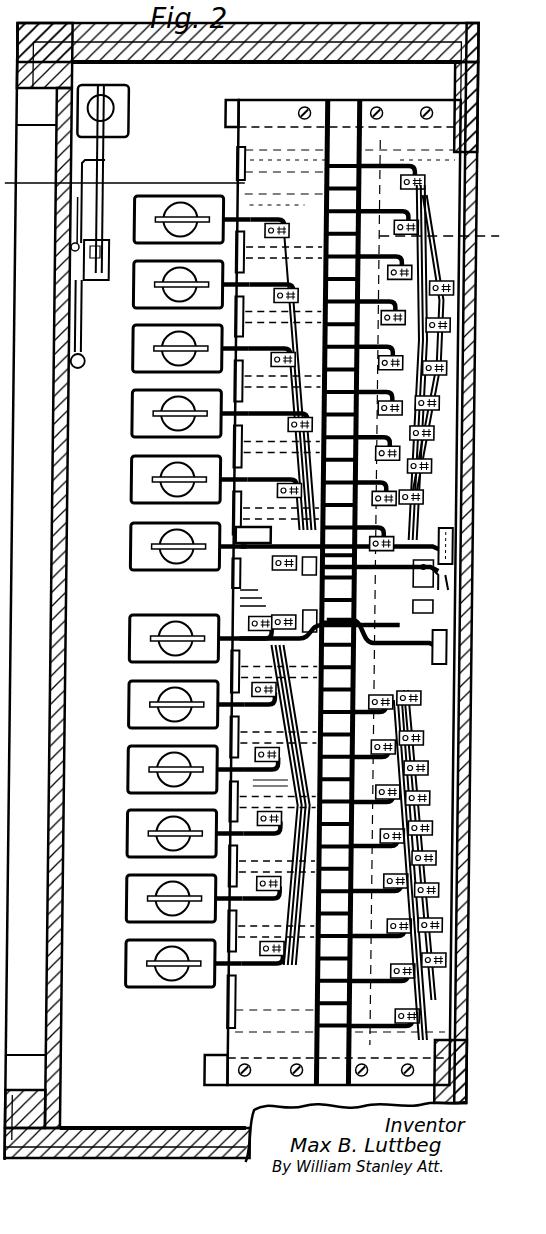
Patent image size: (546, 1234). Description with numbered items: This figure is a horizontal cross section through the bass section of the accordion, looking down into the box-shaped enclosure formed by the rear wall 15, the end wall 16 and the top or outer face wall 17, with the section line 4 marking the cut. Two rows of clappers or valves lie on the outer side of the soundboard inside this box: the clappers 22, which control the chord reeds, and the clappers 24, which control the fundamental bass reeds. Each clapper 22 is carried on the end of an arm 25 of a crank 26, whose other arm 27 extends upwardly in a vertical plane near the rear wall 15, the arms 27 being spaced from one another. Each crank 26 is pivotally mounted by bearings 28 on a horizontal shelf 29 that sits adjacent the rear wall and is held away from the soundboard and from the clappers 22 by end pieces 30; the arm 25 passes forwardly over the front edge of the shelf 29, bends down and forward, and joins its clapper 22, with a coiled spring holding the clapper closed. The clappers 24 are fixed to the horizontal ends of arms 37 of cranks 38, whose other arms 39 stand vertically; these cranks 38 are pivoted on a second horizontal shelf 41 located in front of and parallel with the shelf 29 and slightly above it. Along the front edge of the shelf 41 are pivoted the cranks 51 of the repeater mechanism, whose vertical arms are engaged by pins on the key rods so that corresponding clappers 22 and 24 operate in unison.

The section line / latch mechanism 4 is at (256, 226).
The rear wall 15 is at (472, 188).
The end wall 16 is at (188, 40).
The top or outer face wall 17 is at (60, 470).
The clappers or valves 22 is at (232, 166).
The clappers or valves 24 is at (138, 344).
The arm of crank 25 is at (362, 220).
The crank 26 is at (426, 290).
The arm of crank 27 is at (412, 480).
The bearings 28 is at (445, 338).
The shelf 29 is at (427, 152).
The end pieces 30 is at (352, 108).
The arms of cranks 37 is at (256, 300).
The cranks 38 is at (290, 808).
The arms of cranks 39 is at (292, 552).
The shelf 41 is at (288, 179).
The crank 51 is at (240, 606).